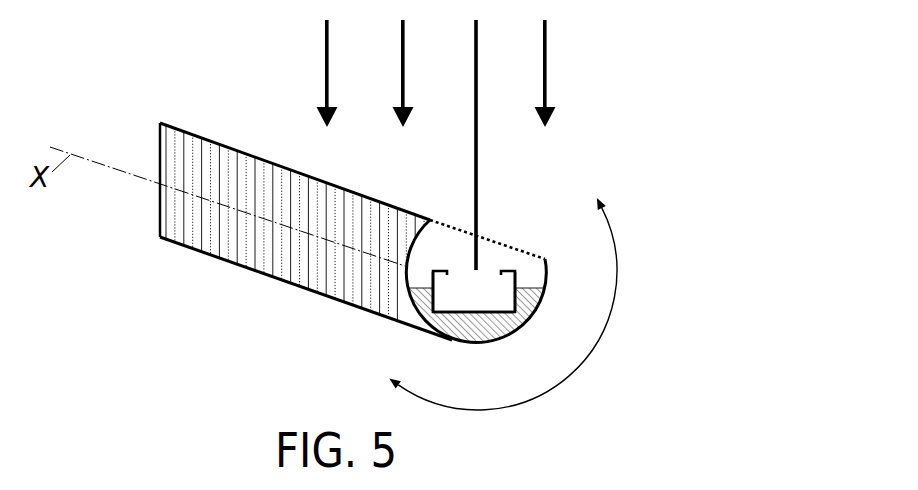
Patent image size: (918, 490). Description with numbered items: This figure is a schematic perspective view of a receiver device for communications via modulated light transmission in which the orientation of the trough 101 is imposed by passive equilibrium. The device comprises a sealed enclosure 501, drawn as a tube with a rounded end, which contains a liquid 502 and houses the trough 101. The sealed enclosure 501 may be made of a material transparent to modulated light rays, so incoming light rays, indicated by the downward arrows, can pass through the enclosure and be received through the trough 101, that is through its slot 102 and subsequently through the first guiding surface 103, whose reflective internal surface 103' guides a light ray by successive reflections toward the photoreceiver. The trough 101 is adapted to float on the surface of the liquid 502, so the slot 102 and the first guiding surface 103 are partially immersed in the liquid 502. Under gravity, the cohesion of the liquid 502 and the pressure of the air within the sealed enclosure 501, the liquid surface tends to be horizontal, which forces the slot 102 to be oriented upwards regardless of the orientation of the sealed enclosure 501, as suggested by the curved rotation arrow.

The sealed enclosure 501 is at (342, 262).
The liquid 502 is at (513, 313).
The trough 101 is at (478, 322).
The slot 102 is at (488, 280).
The first guiding surface 103 is at (563, 279).
The internal surface 103' is at (493, 234).